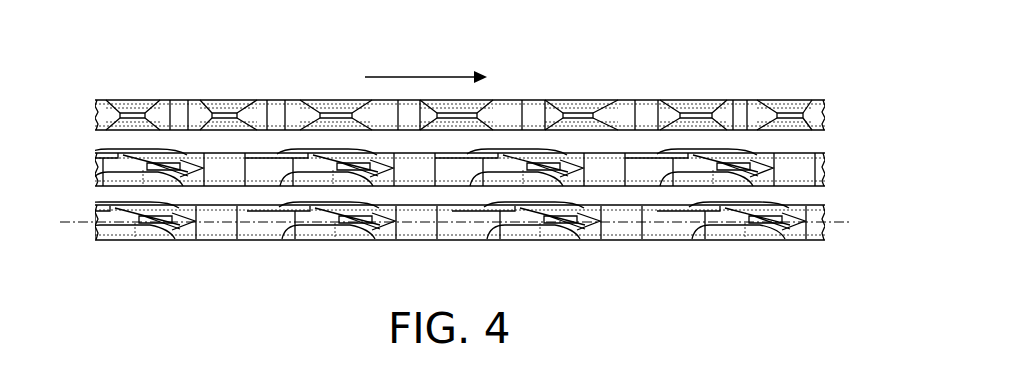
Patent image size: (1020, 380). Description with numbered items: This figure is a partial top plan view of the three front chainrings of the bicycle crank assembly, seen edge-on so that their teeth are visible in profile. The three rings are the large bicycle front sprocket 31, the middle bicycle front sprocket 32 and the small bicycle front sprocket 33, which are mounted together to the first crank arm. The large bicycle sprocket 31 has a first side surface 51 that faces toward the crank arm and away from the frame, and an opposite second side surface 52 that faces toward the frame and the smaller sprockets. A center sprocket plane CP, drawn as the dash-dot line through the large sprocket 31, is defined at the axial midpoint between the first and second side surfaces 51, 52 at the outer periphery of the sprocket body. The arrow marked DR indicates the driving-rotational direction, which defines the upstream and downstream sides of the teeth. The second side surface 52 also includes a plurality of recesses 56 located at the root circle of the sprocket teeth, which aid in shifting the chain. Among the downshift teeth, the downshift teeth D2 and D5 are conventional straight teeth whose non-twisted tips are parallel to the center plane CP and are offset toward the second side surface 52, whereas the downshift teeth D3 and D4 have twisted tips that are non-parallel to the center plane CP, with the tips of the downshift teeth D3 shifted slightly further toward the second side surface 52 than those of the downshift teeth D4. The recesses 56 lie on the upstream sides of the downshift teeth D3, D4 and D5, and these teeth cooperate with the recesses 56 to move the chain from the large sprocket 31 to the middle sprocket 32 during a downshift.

The large bicycle front sprocket 31 is at (228, 250).
The middle bicycle front sprocket 32 is at (157, 140).
The small bicycle front sprocket 33 is at (280, 97).
The first side surface 51 is at (615, 241).
The second side surface 52 is at (604, 207).
The recesses 56 is at (497, 207).
The center sprocket plane CP is at (80, 224).
The driving-rotational direction DR is at (407, 78).
The downshift tooth D2 is at (777, 241).
The downshift tooth D3 is at (570, 241).
The downshift tooth D4 is at (352, 241).
The downshift tooth D5 is at (160, 241).